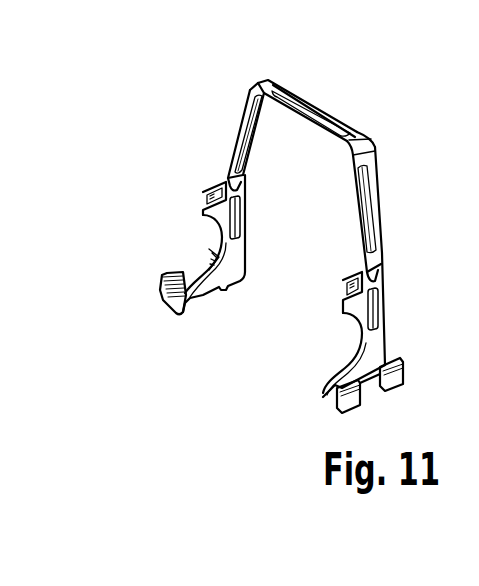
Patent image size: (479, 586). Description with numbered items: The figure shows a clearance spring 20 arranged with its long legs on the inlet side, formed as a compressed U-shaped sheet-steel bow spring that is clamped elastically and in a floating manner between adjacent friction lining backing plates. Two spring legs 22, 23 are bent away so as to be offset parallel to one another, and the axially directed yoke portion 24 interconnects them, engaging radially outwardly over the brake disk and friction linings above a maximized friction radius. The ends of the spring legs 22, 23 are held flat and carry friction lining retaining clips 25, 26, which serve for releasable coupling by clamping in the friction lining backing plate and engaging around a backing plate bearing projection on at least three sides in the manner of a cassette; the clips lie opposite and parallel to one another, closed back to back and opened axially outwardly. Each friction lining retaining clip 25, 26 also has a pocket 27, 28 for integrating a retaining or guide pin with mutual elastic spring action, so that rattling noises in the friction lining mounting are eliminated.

The clearance spring 20 is at (375, 140).
The spring leg 22 is at (373, 215).
The spring leg 23 is at (243, 138).
The yoke portion 24 is at (312, 108).
The friction lining retaining clip 25 is at (222, 215).
The friction lining retaining clip 26 is at (362, 300).
The pocket 27 is at (360, 327).
The pocket 28 is at (217, 232).